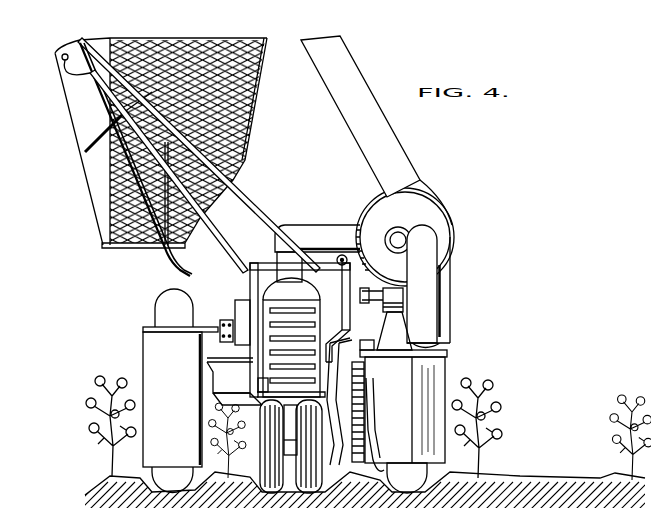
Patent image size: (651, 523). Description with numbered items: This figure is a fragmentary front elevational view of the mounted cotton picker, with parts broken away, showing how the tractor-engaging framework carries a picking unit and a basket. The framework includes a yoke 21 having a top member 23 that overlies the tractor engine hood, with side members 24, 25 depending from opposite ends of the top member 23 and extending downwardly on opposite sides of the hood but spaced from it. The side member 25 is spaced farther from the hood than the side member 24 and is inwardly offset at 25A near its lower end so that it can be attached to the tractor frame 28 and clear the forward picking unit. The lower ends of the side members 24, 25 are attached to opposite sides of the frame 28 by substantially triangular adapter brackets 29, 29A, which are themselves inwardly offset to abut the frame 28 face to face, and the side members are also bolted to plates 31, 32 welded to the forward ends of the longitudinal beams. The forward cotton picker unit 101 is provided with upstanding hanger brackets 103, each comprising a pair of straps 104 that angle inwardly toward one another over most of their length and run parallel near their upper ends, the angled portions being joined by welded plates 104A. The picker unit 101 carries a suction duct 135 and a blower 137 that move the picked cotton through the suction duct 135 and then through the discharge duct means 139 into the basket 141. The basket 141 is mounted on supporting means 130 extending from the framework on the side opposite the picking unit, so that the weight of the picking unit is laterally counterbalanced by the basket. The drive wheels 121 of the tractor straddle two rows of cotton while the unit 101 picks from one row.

The basket 141 is at (95, 190).
The supporting means 130 is at (241, 196).
The yoke 21 is at (264, 257).
The discharge duct means 139 is at (349, 88).
The blower 137 is at (424, 217).
The suction duct 135 is at (381, 192).
The straps 104 is at (403, 307).
The plates 104A is at (398, 330).
The plate 31 is at (363, 297).
The side member 25 is at (346, 312).
The top member 23 is at (305, 271).
The hanger brackets 103 is at (378, 323).
The inward offset 25A is at (340, 346).
The forward cotton picker unit 101 is at (401, 396).
The adapter bracket 29A is at (320, 388).
The adapter bracket 29 is at (258, 384).
The tractor frame 28 is at (273, 390).
The side member 24 is at (253, 346).
The plate 32 is at (242, 308).
The drive wheels 121 is at (162, 312).